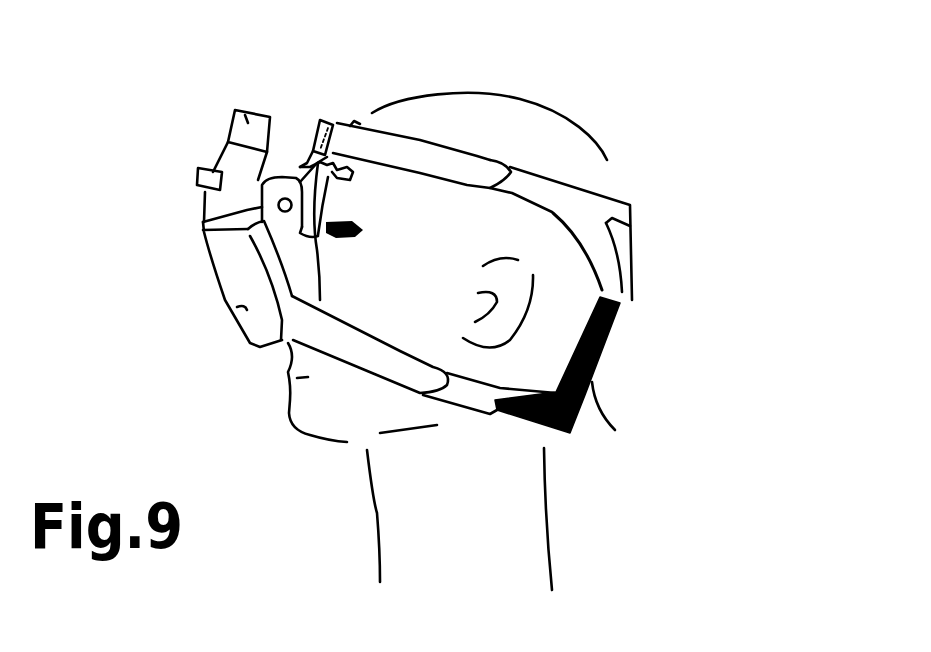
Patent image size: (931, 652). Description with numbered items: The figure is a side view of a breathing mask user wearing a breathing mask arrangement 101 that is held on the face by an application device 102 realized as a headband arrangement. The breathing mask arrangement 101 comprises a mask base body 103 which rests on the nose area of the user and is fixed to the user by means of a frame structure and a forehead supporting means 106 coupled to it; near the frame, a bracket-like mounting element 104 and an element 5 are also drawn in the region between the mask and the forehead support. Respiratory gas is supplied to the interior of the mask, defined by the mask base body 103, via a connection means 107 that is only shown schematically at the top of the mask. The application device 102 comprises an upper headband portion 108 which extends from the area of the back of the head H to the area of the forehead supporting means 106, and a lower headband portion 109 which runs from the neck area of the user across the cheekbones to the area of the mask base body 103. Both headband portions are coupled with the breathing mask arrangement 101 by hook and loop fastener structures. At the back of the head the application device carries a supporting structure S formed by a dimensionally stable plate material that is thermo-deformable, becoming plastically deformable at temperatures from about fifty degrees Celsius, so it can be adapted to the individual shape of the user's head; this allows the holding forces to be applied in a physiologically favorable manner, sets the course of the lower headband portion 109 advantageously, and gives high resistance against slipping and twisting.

The breathing mask arrangement 101 is at (182, 301).
The application device 102 is at (678, 178).
The mask base body 103 is at (233, 327).
The mounting bracket 104 is at (253, 233).
The eyepiece 5 is at (308, 281).
The forehead supporting means 106 is at (330, 120).
The connection means 107 is at (245, 108).
The upper headband portion 108 is at (543, 168).
The lower headband portion 109 is at (462, 395).
The back of the head H is at (658, 336).
The supporting structure S is at (637, 450).